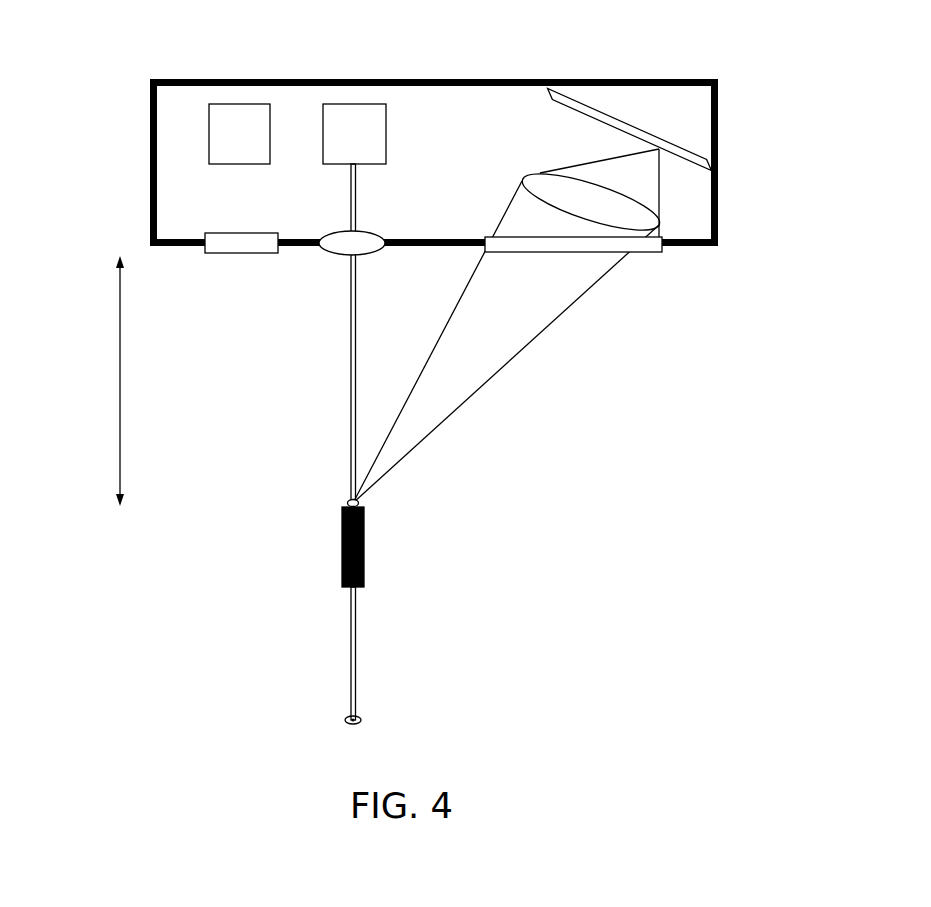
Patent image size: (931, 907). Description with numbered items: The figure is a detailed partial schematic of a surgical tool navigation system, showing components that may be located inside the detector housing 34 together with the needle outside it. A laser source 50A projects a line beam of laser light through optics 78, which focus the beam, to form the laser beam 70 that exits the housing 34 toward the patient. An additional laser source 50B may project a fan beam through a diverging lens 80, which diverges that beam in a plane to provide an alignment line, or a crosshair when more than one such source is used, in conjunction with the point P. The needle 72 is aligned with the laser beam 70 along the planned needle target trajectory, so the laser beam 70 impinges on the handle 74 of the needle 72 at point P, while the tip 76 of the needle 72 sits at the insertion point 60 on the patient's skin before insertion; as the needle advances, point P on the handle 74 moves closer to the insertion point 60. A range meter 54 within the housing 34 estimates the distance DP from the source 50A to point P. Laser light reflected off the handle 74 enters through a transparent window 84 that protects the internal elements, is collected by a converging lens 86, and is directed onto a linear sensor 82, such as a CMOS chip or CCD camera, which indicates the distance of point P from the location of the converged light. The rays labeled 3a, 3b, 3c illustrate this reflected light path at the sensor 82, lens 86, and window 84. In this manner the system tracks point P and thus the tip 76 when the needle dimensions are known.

The detector housing 34 is at (718, 105).
The range meter 54 is at (483, 116).
The laser source 50A is at (354, 134).
The additional laser source 50B is at (239, 134).
The laser beam 70 is at (349, 336).
The needle 72 is at (357, 645).
The handle 74 is at (342, 548).
The tip 76 is at (360, 723).
The insertion point 60 is at (344, 720).
The optics 78 is at (368, 233).
The diverging lens 80 is at (220, 233).
The linear sensor 82 is at (710, 168).
The transparent window 84 is at (660, 252).
The converging lens 86 is at (662, 218).
The light beam reflected by mirror 3a is at (543, 120).
The light beam through lens 3b is at (494, 177).
The light beam through window 3c is at (506, 342).
The point P is at (359, 503).
The distance DP is at (118, 380).